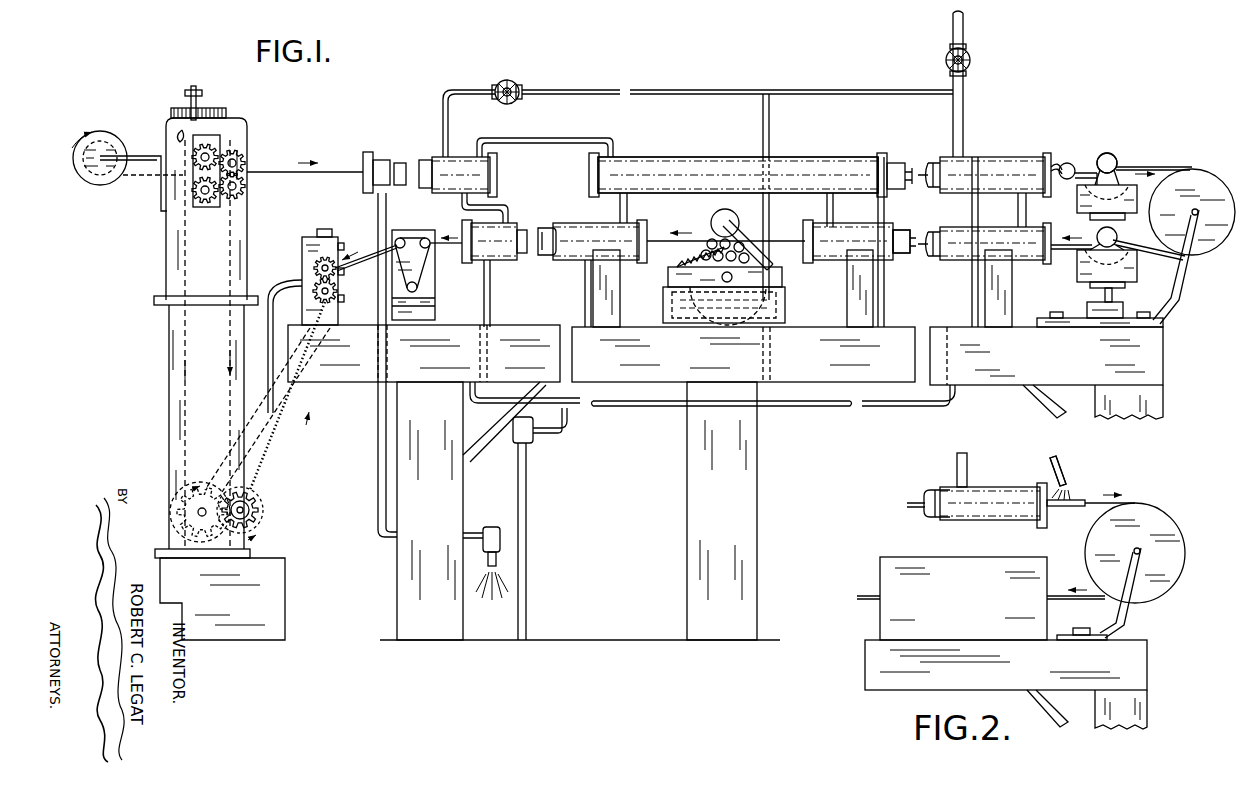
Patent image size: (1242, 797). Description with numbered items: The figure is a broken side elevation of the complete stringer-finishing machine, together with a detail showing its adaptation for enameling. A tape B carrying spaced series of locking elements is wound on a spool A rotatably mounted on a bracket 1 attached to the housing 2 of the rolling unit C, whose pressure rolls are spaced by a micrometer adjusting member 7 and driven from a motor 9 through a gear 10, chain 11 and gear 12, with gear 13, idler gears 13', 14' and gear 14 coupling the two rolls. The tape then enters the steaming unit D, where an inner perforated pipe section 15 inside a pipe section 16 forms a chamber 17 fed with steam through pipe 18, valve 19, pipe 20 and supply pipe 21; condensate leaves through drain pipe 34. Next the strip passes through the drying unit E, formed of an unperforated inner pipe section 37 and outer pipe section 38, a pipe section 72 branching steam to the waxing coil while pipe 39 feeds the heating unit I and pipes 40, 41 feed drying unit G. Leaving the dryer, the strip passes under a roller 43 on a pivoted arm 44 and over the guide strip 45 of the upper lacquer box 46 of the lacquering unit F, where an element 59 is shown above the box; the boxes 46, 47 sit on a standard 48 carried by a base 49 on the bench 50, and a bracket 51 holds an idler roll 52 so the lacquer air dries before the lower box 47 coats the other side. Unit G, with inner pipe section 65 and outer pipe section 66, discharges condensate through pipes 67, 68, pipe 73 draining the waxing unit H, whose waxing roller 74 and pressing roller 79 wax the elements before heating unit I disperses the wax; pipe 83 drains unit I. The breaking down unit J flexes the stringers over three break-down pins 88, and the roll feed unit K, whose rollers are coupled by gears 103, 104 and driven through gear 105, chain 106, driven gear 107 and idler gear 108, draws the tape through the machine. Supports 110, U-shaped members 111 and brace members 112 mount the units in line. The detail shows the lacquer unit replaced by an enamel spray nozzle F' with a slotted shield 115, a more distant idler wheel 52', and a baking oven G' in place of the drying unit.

In FIG. 1, the spool A is at (100, 130).
In FIG. 1, the bracket 1 is at (159, 152).
In FIG. 1, the tape B is at (146, 178).
In FIG. 1, the housing 2 is at (172, 128).
In FIG. 1, the micrometer adjusting member 7 is at (196, 86).
In FIG. 1, the rolling unit C is at (252, 122).
In FIG. 1, the chain 11 is at (183, 413).
In FIG. 1, the gear 12 is at (207, 210).
In FIG. 1, the gear 14 is at (225, 129).
In FIG. 1, the idler gear 14' is at (263, 152).
In FIG. 1, the gear 13 is at (179, 201).
In FIG. 1, the idler gear 13' is at (257, 185).
In FIG. 1, the steaming unit D is at (382, 150).
In FIG. 1, the inner perforated pipe section 15 is at (401, 161).
In FIG. 1, the chamber 17 is at (428, 156).
In FIG. 1, the pipe section 16 is at (460, 157).
In FIG. 1, the pipe 18 is at (458, 90).
In FIG. 1, the valve 19 is at (510, 80).
In FIG. 1, the pipe 20 is at (588, 90).
In FIG. 1, the supply pipe 21 is at (965, 86).
In FIG. 1, the pipe section 72 is at (770, 128).
In FIG. 1, the drying unit E is at (689, 153).
In FIG. 2, the drying unit E is at (990, 485).
In FIG. 1, the pipe section 38 is at (850, 157).
In FIG. 1, the inner pipe section 37 is at (900, 162).
In FIG. 1, the brace members 112 is at (566, 138).
In FIG. 1, the pipe 39 is at (629, 211).
In FIG. 1, the pipe 83 is at (491, 300).
In FIG. 1, the heating unit I is at (547, 258).
In FIG. 1, the supports 110 is at (621, 283).
In FIG. 1, the U-shaped members 111 is at (585, 302).
In FIG. 1, the waxing unit H is at (787, 291).
In FIG. 1, the waxing roller 74 is at (690, 255).
In FIG. 1, the roller 79 is at (731, 217).
In FIG. 1, the pipe 40 is at (827, 208).
In FIG. 1, the inner unperforated pipe section 65 is at (904, 229).
In FIG. 1, the drying unit G is at (908, 265).
In FIG. 1, the outer pipe section 66 is at (958, 227).
In FIG. 1, the pipe 41 is at (1027, 213).
In FIG. 1, the arm 44 is at (1060, 162).
In FIG. 1, the roller 43 is at (1071, 163).
In FIG. 1, the guide strip 45 is at (1092, 183).
In FIG. 1, the roller 59 is at (1116, 160).
In FIG. 1, the lacquering unit F is at (1112, 146).
In FIG. 1, the upper lacquer box 46 is at (1107, 202).
In FIG. 1, the idler roll 52 is at (1192, 198).
In FIG. 1, the lower lacquer box 47 is at (1107, 257).
In FIG. 1, the standard 48 is at (1113, 296).
In FIG. 1, the bracket 51 is at (1181, 293).
In FIG. 1, the base 49 is at (1072, 327).
In FIG. 1, the bench 50 is at (1046, 373).
In FIG. 1, the pipe 73 is at (772, 355).
In FIG. 1, the drain pipe 34 is at (378, 465).
In FIG. 1, the pipe 68 is at (528, 490).
In FIG. 1, the pipe 67 is at (816, 407).
In FIG. 1, the roll feed unit K is at (306, 234).
In FIG. 1, the gear 103 is at (313, 266).
In FIG. 1, the gear 104 is at (339, 291).
In FIG. 1, the gear 105 is at (315, 318).
In FIG. 1, the chain 106 is at (300, 437).
In FIG. 1, the idler gear 108 is at (250, 494).
In FIG. 1, the driven gear 107 is at (262, 526).
In FIG. 1, the gear 10 is at (176, 516).
In FIG. 1, the motor 9 is at (170, 541).
In FIG. 1, the breaking down unit J is at (437, 285).
In FIG. 1, the break-down pins 88 is at (425, 238).
In FIG. 2, the slotted shield 115 is at (1048, 478).
In FIG. 2, the enamel spray nozzle F' is at (1073, 462).
In FIG. 2, the idler wheel 52' is at (1135, 539).
In FIG. 2, the baking oven G' is at (963, 581).